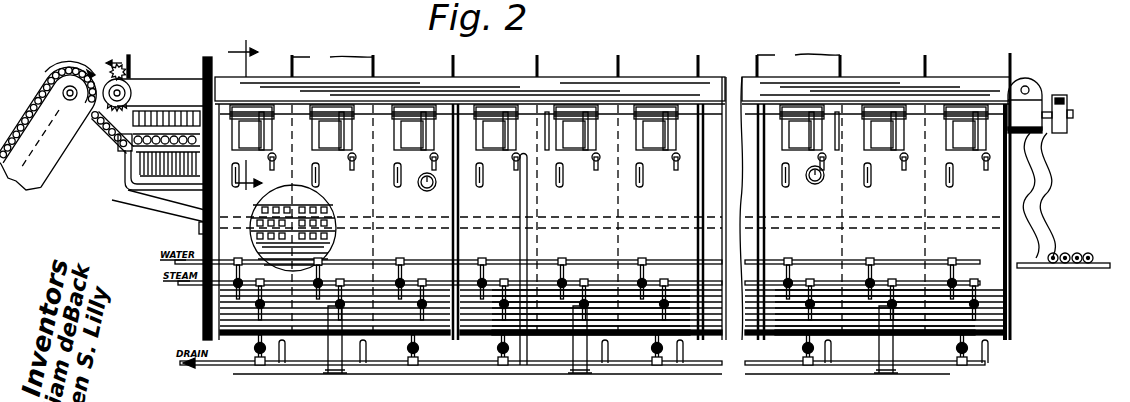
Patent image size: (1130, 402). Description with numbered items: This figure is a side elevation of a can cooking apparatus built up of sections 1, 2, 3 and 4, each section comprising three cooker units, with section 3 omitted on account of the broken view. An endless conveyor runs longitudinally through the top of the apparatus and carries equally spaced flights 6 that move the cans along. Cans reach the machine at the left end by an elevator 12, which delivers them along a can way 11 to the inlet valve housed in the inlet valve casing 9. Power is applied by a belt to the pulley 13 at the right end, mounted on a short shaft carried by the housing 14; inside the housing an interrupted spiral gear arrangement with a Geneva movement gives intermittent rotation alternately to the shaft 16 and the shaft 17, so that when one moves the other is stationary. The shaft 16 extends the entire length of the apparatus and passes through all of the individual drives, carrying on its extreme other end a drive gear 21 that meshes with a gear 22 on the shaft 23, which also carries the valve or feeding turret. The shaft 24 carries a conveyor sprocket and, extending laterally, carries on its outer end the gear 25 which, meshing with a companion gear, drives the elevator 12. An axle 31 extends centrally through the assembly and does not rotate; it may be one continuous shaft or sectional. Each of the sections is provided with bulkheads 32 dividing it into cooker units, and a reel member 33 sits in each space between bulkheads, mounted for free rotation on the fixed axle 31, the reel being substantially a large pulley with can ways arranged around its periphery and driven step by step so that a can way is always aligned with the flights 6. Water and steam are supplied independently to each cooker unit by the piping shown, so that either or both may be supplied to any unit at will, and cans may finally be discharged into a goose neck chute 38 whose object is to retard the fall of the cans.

The section 1 is at (336, 220).
The section 2 is at (591, 220).
The section 4 is at (875, 220).
The section 3 is at (245, 116).
The flights 6 is at (566, 56).
The inlet valve casing 9 is at (124, 194).
The can way 11 is at (100, 130).
The elevator 12 is at (40, 97).
The pulley 13 is at (1060, 94).
The housing 14 is at (1034, 98).
The shaft 16 is at (550, 118).
The shaft 17 is at (1026, 86).
The drive gear 21 is at (205, 72).
The gear 22 is at (172, 196).
The shaft 23 is at (126, 166).
The shaft 24 is at (122, 92).
The gear 25 is at (103, 74).
The axle 31 is at (199, 228).
The bulkheads 32 is at (332, 239).
The reel member 33 is at (330, 210).
The goose neck chute 38 is at (1045, 187).